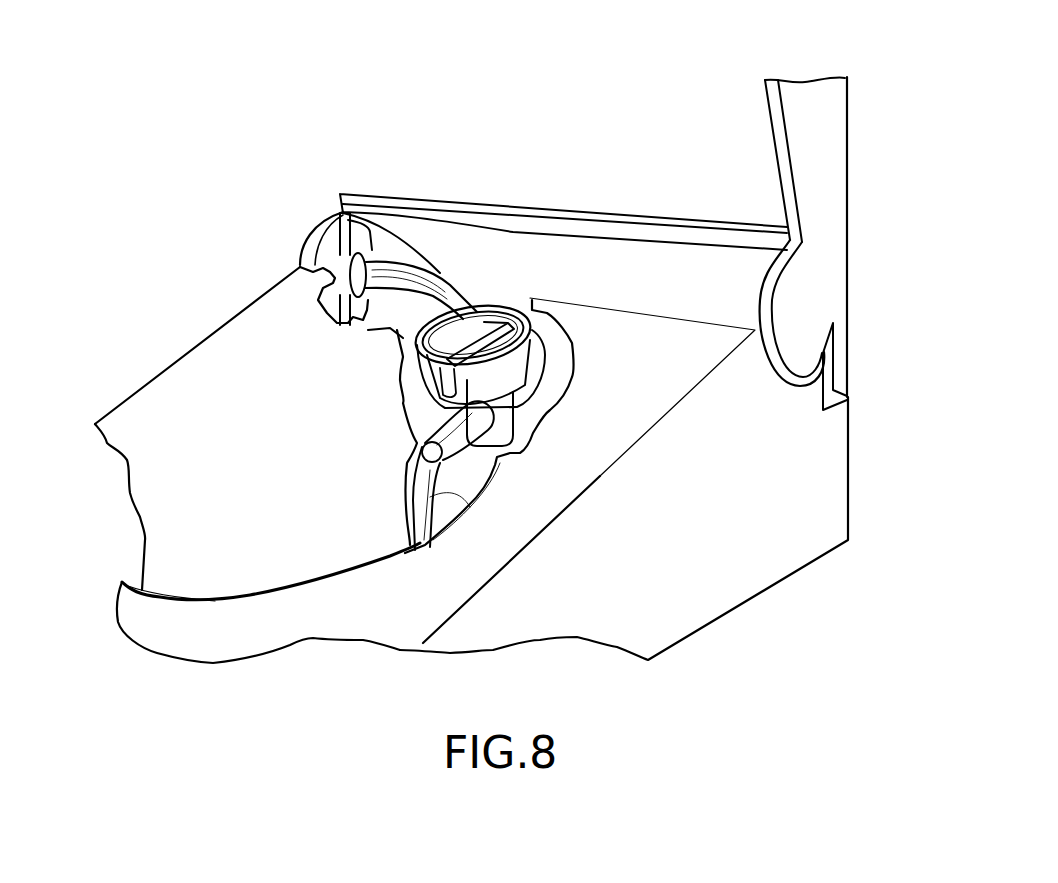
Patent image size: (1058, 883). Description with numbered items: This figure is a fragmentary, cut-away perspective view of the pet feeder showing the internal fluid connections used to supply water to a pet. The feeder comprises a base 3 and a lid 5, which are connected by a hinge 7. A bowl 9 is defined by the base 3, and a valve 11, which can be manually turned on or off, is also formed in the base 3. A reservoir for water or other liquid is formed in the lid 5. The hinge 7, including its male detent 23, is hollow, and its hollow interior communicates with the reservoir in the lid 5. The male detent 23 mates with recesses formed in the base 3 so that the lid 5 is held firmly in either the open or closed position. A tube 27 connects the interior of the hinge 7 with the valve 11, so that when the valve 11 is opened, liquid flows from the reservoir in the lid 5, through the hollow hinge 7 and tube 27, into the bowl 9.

The base 3 is at (788, 477).
The lid 5 is at (823, 122).
The hinge 7 is at (313, 240).
The bowl 9 is at (205, 447).
The valve 11 is at (487, 337).
The male detent 23 is at (343, 230).
The tube 27 is at (387, 270).